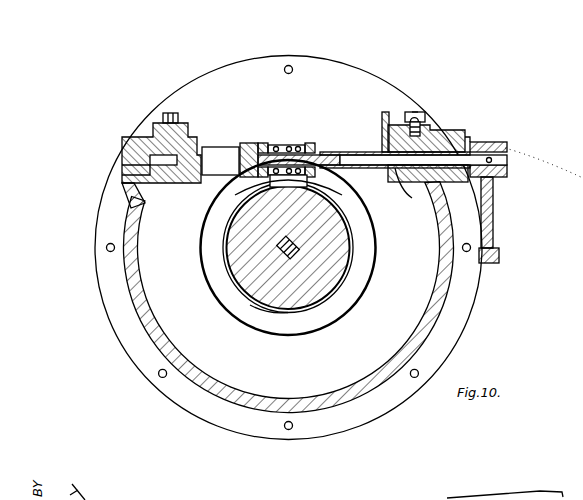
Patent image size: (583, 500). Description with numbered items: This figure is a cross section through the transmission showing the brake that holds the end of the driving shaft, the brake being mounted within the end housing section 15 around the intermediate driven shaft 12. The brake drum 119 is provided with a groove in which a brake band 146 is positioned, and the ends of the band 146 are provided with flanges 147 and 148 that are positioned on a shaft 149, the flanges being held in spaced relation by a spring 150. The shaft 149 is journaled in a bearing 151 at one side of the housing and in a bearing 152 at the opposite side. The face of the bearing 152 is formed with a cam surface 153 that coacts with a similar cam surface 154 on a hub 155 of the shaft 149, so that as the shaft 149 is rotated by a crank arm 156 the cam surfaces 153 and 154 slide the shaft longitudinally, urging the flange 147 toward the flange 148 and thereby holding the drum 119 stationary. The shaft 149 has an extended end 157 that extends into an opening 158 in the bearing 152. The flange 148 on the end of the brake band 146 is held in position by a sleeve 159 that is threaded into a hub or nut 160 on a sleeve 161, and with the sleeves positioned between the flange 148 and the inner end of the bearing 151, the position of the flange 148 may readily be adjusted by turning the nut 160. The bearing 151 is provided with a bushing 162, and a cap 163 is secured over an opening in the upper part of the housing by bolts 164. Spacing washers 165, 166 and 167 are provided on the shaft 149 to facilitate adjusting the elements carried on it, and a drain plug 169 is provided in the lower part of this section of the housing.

The intermediate driven shaft 12 is at (282, 251).
The end housing section 15 is at (434, 333).
The brake drum 119 is at (270, 306).
The brake band 146 is at (352, 272).
The flange 147 is at (265, 143).
The flange 148 is at (308, 147).
The shaft 149 is at (367, 172).
The spring 150 is at (283, 153).
The bearing 151 is at (458, 142).
The bearing 152 is at (122, 153).
The cam surface 153 is at (130, 200).
The cam surface 154 is at (202, 147).
The hub 155 is at (208, 170).
The crank arm 156 is at (498, 208).
The extended end 157 is at (172, 177).
The opening 158 is at (150, 163).
The sleeve 159 is at (383, 180).
The hub or nut 160 is at (343, 152).
The sleeve 161 is at (323, 147).
The bushing 162 is at (440, 135).
The cap 163 is at (297, 83).
The bolts 164 is at (415, 124).
The spacing washer 165 is at (257, 150).
The spacing washer 166 is at (350, 215).
The spacing washer 167 is at (388, 123).
The drain plug 169 is at (418, 112).